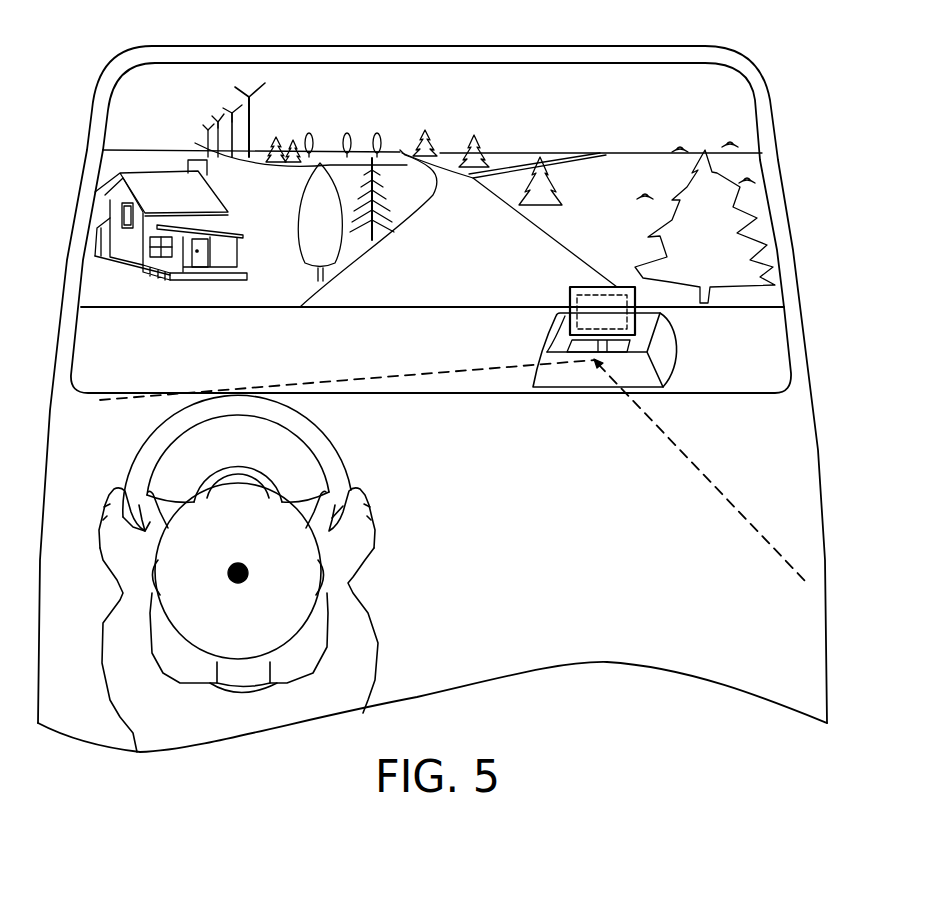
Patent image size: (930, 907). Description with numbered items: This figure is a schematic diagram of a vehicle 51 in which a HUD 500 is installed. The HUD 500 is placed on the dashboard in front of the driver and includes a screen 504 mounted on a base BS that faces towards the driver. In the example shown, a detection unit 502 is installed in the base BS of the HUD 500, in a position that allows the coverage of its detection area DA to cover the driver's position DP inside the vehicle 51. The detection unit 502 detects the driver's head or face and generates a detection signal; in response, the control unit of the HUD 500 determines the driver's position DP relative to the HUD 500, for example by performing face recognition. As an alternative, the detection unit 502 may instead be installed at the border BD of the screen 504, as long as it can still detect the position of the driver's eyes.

The vehicle 51 is at (55, 28).
The HUD 500 is at (556, 295).
The detection unit 502 is at (595, 361).
The screen 504 is at (603, 289).
The border BD is at (577, 320).
The base BS is at (663, 355).
The detection area DA is at (655, 423).
The driver's position DP is at (248, 573).